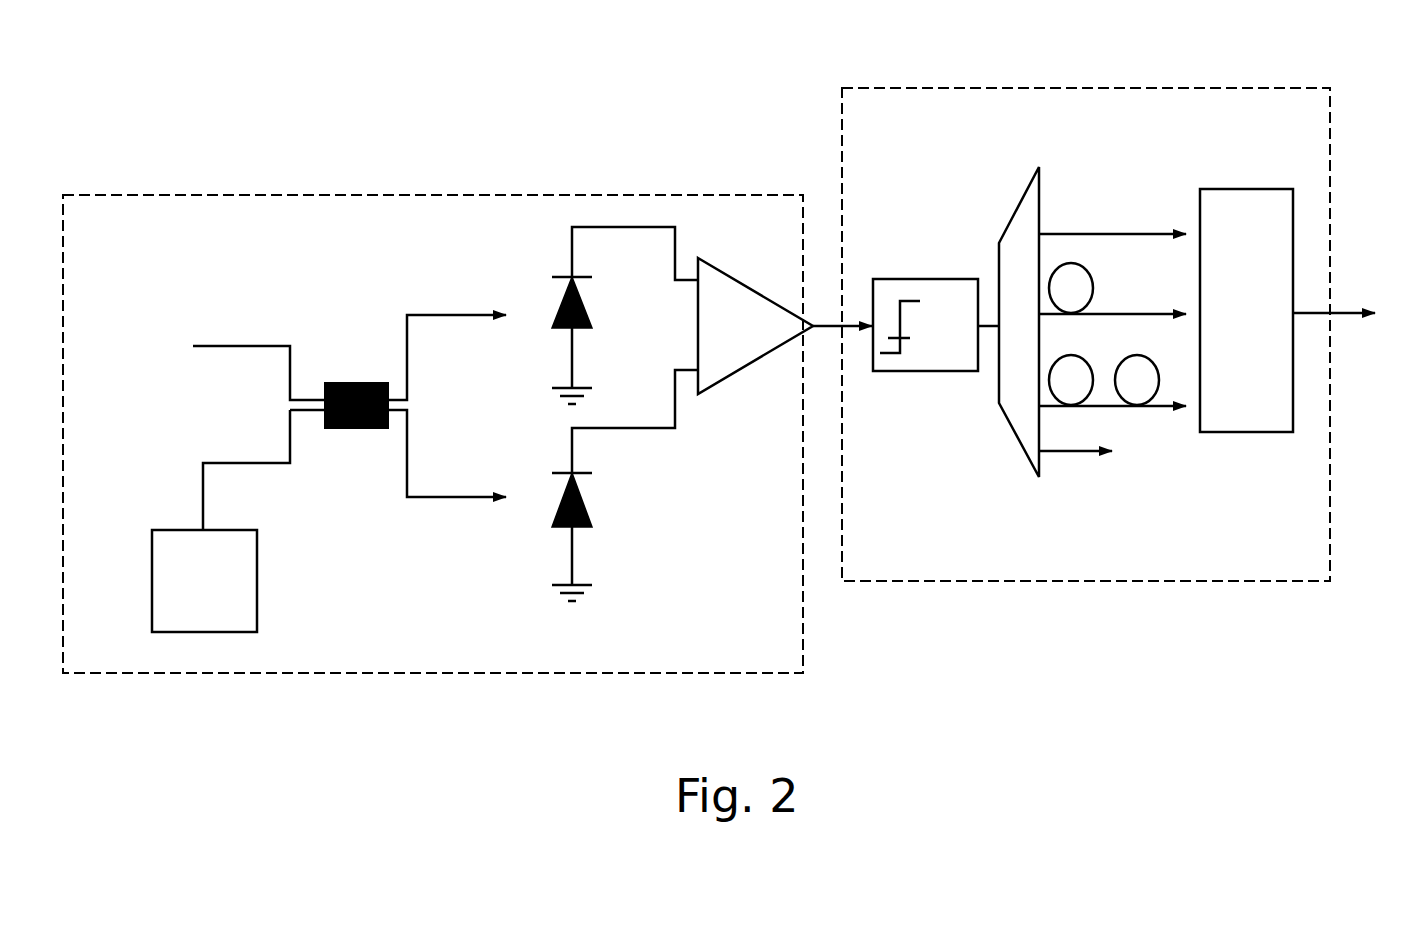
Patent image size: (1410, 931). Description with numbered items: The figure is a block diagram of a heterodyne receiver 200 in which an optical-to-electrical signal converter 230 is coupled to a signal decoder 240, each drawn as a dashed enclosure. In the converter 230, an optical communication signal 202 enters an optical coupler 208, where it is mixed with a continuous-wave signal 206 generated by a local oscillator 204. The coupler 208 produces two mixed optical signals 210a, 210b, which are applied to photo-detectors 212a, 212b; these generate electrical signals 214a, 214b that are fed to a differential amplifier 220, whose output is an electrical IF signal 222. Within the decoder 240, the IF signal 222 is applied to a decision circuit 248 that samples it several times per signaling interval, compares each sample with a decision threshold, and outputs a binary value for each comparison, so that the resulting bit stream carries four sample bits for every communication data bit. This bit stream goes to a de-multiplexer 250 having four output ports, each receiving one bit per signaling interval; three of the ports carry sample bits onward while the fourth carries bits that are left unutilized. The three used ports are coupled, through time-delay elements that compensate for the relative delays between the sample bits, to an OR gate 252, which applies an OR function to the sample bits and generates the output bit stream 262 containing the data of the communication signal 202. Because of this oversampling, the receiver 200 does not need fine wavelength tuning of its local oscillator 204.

The heterodyne receiver 200 is at (148, 57).
The optical communication signal 202 is at (233, 346).
The local oscillator 204 is at (257, 590).
The continuous-wave signal 206 is at (257, 463).
The optical coupler 208 is at (338, 383).
The mixed optical signal 210a is at (441, 315).
The mixed optical signal 210b is at (445, 497).
The photo-detector 212a is at (590, 312).
The photo-detector 212b is at (590, 503).
The electrical signal 214a is at (606, 227).
The electrical signal 214b is at (655, 428).
The differential amplifier 220 is at (722, 271).
The electrical IF signal 222 is at (836, 326).
The optical-to-electrical signal converter 230 is at (313, 673).
The signal decoder 240 is at (1135, 581).
The decision circuit 248 is at (937, 279).
The de-multiplexer 250 is at (1042, 183).
The OR gate 252 is at (1230, 189).
The bit stream 262 is at (1308, 310).